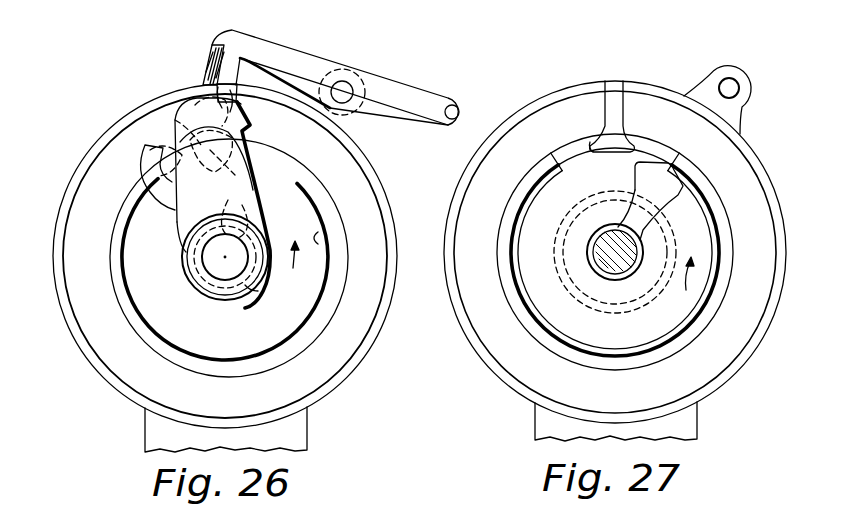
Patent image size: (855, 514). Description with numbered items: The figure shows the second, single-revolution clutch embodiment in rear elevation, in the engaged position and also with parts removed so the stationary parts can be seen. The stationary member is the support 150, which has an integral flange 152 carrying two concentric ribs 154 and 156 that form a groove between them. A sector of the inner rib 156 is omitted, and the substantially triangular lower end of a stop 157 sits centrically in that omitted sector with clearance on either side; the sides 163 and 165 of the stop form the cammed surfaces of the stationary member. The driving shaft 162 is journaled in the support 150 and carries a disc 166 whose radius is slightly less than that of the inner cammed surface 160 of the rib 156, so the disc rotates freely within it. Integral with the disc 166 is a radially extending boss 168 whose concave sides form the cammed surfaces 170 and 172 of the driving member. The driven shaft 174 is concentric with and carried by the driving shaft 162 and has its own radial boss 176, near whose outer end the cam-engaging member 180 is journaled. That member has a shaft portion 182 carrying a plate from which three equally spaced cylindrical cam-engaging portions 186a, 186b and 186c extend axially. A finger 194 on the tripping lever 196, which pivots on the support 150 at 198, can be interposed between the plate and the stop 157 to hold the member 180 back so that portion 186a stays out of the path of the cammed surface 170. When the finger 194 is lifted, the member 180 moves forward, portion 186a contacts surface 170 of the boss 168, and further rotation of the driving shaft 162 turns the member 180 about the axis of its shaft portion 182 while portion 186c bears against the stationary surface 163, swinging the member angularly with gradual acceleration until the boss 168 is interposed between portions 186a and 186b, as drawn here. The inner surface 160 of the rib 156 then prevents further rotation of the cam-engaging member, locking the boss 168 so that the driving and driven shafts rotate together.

In FIG. 26, the support 150 is at (146, 445).
In FIG. 27, the support 150 is at (550, 425).
In FIG. 26, the flange 152 is at (130, 373).
In FIG. 27, the flange 152 is at (485, 317).
In FIG. 26, the outer rib 154 is at (347, 374).
In FIG. 27, the outer rib 154 is at (747, 352).
In FIG. 26, the inner rib 156 is at (287, 352).
In FIG. 27, the inner rib 156 is at (643, 362).
In FIG. 26, the stop 157 is at (200, 88).
In FIG. 27, the stop 157 is at (617, 102).
In FIG. 26, the inner cammed surface 160 is at (322, 230).
In FIG. 27, the inner cammed surface 160 is at (690, 199).
In FIG. 26, the driving shaft 162 is at (220, 267).
In FIG. 27, the driving shaft 162 is at (617, 273).
In FIG. 26, the side of stop 163 is at (173, 127).
In FIG. 27, the side of stop 163 is at (604, 130).
In FIG. 27, the side of stop 165 is at (626, 131).
In FIG. 26, the disc 166 is at (191, 272).
In FIG. 27, the disc 166 is at (588, 284).
In FIG. 26, the driving boss 168 is at (177, 226).
In FIG. 27, the driving boss 168 is at (642, 185).
In FIG. 26, the cammed surface 170 is at (165, 214).
In FIG. 26, the cammed surface 172 is at (243, 196).
In FIG. 26, the driven shaft 174 is at (245, 287).
In FIG. 26, the driven boss 176 is at (252, 220).
In FIG. 26, the cam-engaging member 180 is at (138, 154).
In FIG. 26, the shaft portion 182 is at (240, 132).
In FIG. 26, the cam-engaging portion 186a is at (166, 193).
In FIG. 26, the cam-engaging portion 186b is at (248, 150).
In FIG. 26, the cam-engaging portion 186c is at (188, 110).
In FIG. 26, the finger 194 is at (213, 68).
In FIG. 26, the tripping lever 196 is at (292, 68).
In FIG. 26, the pivot 198 is at (345, 90).